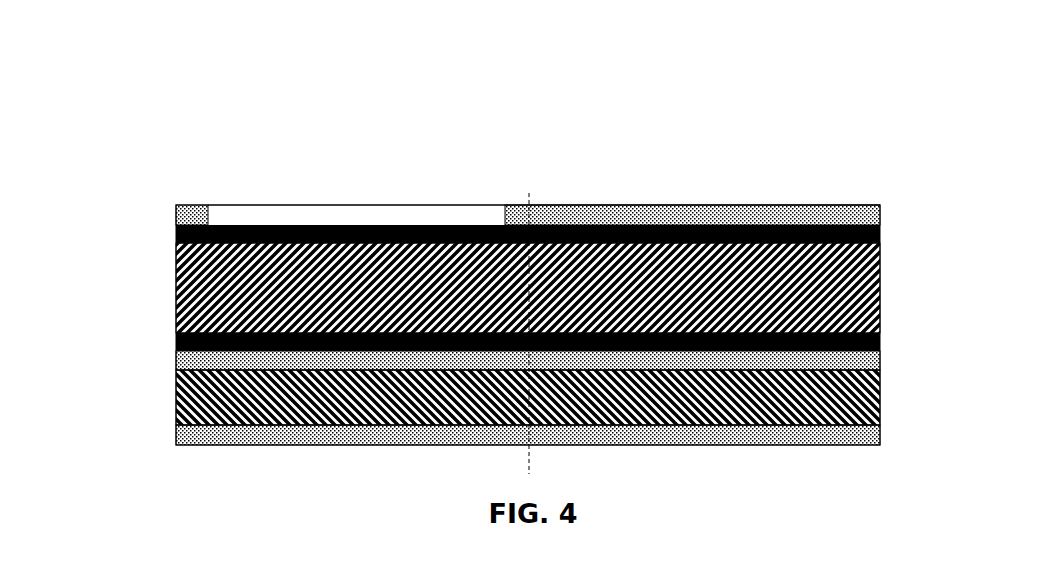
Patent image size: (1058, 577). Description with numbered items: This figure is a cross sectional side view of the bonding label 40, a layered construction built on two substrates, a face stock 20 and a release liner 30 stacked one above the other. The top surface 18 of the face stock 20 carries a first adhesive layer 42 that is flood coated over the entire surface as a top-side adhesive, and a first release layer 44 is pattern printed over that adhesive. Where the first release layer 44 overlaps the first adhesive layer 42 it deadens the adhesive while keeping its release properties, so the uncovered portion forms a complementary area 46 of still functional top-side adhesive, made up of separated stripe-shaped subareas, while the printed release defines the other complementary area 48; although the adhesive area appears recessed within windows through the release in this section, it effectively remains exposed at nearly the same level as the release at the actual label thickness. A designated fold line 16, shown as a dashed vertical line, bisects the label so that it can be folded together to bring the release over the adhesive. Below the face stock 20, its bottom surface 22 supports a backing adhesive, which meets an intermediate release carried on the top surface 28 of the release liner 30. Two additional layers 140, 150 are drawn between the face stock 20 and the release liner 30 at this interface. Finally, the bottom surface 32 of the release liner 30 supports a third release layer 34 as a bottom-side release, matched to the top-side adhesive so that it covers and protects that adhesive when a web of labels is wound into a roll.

The bonding label 40 is at (559, 160).
The first release layer 44 is at (872, 206).
The complementary area 46 is at (357, 193).
The complementary area 48 is at (718, 192).
The first adhesive layer 42 is at (872, 224).
The face stock 20 is at (872, 275).
The top surface 18 is at (168, 235).
The bonding layer 140 is at (872, 330).
The bottom surface 22 is at (168, 325).
The intermediate layer 150 is at (872, 350).
The release liner 30 is at (872, 388).
The top surface 28 is at (168, 362).
The third release layer 34 is at (872, 423).
The bottom surface 32 is at (168, 417).
The designated fold line 16 is at (524, 194).